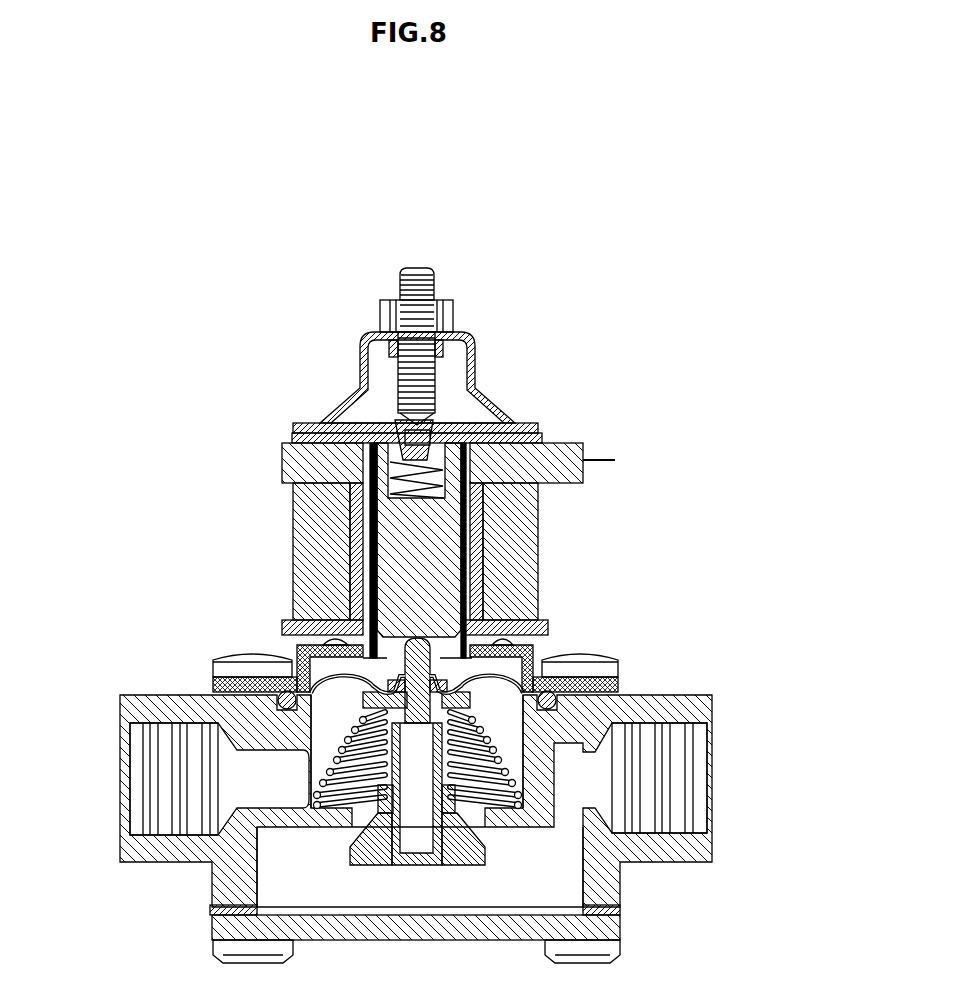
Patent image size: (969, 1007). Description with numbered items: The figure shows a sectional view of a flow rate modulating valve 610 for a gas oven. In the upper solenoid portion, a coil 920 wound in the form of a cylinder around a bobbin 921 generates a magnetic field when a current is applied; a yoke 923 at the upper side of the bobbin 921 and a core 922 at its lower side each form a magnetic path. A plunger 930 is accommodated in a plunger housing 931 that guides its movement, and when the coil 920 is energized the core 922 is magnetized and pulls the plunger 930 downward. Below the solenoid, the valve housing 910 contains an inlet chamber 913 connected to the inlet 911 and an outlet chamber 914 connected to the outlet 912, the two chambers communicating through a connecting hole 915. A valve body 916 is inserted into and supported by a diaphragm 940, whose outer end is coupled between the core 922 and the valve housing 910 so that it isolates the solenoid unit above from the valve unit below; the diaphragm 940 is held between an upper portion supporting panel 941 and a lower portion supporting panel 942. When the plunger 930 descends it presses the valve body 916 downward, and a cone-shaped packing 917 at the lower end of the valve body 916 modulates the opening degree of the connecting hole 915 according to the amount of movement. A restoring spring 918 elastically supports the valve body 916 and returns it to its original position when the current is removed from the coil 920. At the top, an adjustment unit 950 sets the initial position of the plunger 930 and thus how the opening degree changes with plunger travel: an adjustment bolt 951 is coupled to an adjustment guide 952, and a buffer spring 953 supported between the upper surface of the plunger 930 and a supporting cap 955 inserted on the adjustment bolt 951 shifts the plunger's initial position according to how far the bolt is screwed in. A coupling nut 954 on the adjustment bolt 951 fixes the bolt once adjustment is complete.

The flow rate modulating valve 610 is at (362, 187).
The valve housing 910 is at (122, 850).
The inlet 911 is at (152, 795).
The outlet 912 is at (683, 796).
The inlet chamber 913 is at (503, 724).
The outlet chamber 914 is at (515, 880).
The connecting hole 915 is at (455, 862).
The valve body 916 is at (483, 622).
The packing 917 is at (373, 848).
The restoring spring 918 is at (497, 760).
The coil 920 is at (533, 528).
The bobbin 921 is at (478, 550).
The core 922 is at (297, 652).
The yoke 923 is at (543, 427).
The plunger 930 is at (390, 548).
The plunger housing 931 is at (372, 574).
The diaphragm 940 is at (530, 695).
The upper portion supporting panel 941 is at (447, 680).
The lower portion supporting panel 942 is at (248, 676).
The adjustment unit 950 is at (538, 262).
The adjustment bolt 951 is at (437, 287).
The adjustment guide 952 is at (476, 365).
The buffer spring 953 is at (455, 422).
The coupling nut 954 is at (445, 318).
The supporting cap 955 is at (445, 417).